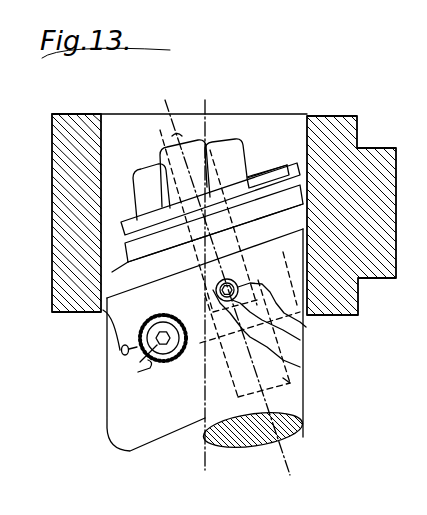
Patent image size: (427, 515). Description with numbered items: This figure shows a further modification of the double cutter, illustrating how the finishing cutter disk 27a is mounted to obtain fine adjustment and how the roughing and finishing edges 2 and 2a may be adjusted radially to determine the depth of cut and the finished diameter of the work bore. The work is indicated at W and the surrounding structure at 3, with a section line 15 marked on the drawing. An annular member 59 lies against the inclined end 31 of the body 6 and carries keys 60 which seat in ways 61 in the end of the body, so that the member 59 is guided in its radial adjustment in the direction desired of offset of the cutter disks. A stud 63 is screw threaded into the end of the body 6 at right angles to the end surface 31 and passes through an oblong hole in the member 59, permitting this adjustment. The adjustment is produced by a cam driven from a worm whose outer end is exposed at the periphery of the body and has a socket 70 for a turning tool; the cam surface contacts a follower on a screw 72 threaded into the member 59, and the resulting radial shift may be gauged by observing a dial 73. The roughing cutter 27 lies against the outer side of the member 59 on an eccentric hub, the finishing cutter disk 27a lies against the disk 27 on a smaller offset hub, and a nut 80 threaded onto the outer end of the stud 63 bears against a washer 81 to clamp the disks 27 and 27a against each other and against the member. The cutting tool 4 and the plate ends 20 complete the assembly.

The machine part 3 is at (104, 130).
The workpiece W is at (340, 128).
The body 6 is at (117, 413).
The roughing cutter 27 is at (143, 272).
The roughing edge 2 is at (128, 253).
The clamp plate ends 20 is at (117, 217).
The finishing edge 2a is at (135, 217).
The cutting tool 4 is at (175, 133).
The nut 80 is at (217, 147).
The washer 81 is at (243, 173).
The finishing cutter disk 27a is at (263, 193).
The section line 15 is at (147, 97).
The annular member 59 is at (122, 305).
The inclined end 31 is at (118, 351).
The socket 70 is at (148, 362).
The dial 73 is at (150, 372).
The screw 72 is at (306, 327).
The keys 60 is at (300, 340).
The ways 61 is at (300, 367).
The stud 63 is at (283, 378).